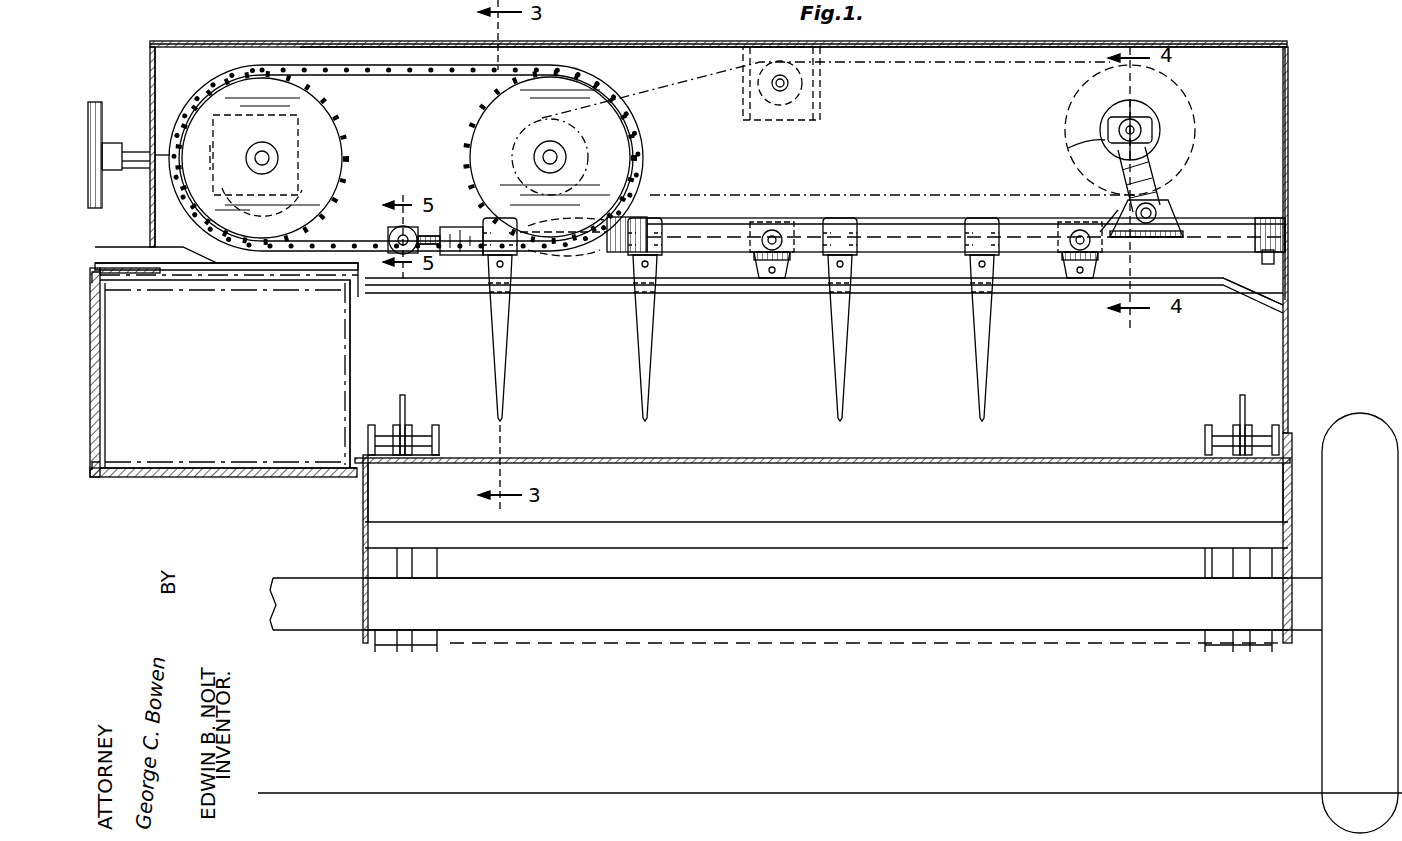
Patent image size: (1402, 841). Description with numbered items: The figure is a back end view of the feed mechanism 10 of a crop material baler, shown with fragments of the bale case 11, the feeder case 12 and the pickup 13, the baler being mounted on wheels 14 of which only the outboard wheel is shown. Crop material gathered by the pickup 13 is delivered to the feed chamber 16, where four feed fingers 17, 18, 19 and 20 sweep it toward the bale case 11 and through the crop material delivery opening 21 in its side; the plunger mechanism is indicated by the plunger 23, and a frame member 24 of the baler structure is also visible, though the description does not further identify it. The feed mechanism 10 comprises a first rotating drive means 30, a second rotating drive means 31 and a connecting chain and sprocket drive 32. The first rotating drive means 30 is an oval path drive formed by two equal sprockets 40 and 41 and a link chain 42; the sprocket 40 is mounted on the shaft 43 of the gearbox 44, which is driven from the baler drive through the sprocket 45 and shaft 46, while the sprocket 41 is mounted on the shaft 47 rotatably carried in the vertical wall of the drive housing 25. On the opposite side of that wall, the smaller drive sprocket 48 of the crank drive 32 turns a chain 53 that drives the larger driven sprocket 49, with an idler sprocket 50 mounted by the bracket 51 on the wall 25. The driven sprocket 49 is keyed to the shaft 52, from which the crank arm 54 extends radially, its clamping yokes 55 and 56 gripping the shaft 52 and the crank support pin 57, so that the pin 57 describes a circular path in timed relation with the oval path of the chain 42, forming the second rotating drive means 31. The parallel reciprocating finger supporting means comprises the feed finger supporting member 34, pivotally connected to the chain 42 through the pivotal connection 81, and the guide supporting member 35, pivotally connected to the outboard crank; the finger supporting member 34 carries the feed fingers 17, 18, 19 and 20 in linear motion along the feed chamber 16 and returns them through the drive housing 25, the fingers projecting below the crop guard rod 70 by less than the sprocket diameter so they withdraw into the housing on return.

The feed mechanism 10 is at (470, 257).
The bale case 11 is at (182, 486).
The feeder case 12 is at (900, 470).
The pickup 13 is at (1185, 642).
The wheel 14 is at (1366, 412).
The feed chamber 16 is at (1236, 357).
The lead feed finger 17 is at (503, 345).
The feed finger 18 is at (652, 320).
The feed finger 19 is at (845, 312).
The feed finger 20 is at (992, 310).
The crop material delivery opening 21 is at (350, 358).
The plunger 23 is at (250, 472).
The frame top plate 24 is at (645, 465).
The drive housing 25 is at (645, 44).
The first rotating drive means 30 is at (383, 66).
The second rotating drive means 31 is at (1200, 84).
The chain and sprocket drive 32 is at (940, 54).
The feed finger supporting member 34 is at (608, 260).
The guide supporting member 35 is at (905, 220).
The sprocket 40 is at (330, 112).
The sprocket 41 is at (475, 112).
The link chain 42 is at (416, 68).
The shaft 43 is at (275, 160).
The gearbox 44 is at (348, 182).
The sprocket 45 is at (128, 125).
The shaft 46 is at (160, 150).
The shaft 47 is at (565, 160).
The drive sprocket 48 is at (640, 124).
The driven sprocket 49 is at (1195, 150).
The idler sprocket 50 is at (805, 88).
The bracket 51 is at (823, 118).
The shaft 52 is at (1165, 128).
The chain 53 is at (1060, 72).
The crank arm 54 is at (1152, 176).
The clamping yoke 55 is at (1068, 148).
The clamping yoke 56 is at (1172, 208).
The crank support pin 57 is at (1110, 215).
The crop guard rod 70 is at (782, 282).
The pivotal connection 81 is at (412, 232).